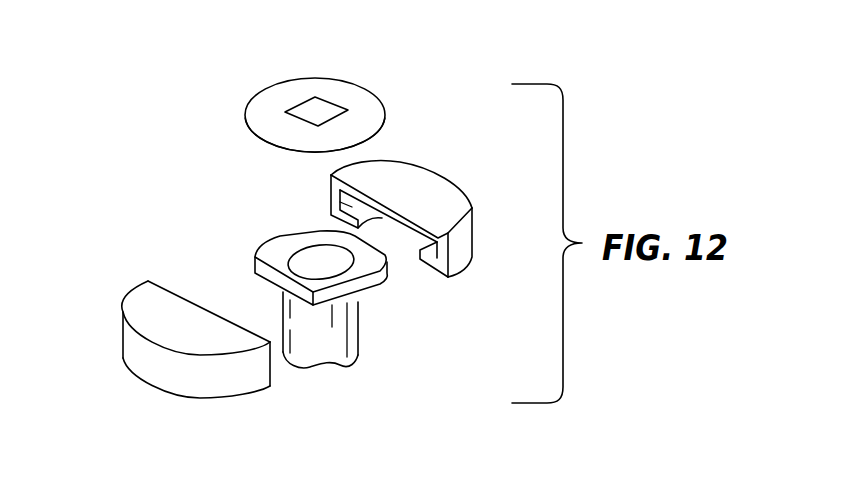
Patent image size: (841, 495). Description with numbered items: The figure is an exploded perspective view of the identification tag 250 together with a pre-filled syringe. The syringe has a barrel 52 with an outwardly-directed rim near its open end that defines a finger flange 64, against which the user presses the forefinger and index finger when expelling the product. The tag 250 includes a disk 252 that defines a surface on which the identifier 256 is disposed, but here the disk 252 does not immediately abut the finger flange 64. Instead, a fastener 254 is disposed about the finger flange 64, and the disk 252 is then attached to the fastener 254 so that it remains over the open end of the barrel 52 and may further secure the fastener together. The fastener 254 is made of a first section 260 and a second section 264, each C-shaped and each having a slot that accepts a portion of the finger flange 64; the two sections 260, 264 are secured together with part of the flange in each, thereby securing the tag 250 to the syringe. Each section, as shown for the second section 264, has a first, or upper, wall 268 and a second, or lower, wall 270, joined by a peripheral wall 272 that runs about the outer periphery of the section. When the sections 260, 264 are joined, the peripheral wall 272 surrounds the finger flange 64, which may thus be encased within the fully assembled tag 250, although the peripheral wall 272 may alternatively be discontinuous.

The tag 250 is at (212, 126).
The disk 252 is at (318, 89).
The identifier 256 is at (318, 108).
The finger flange 64 is at (272, 253).
The barrel 52 is at (347, 338).
The fastener 254 is at (157, 369).
The first section 260 is at (217, 386).
The second section 264 is at (435, 238).
The upper wall 268 is at (435, 230).
The peripheral wall 272 is at (445, 255).
The lower wall 270 is at (432, 265).